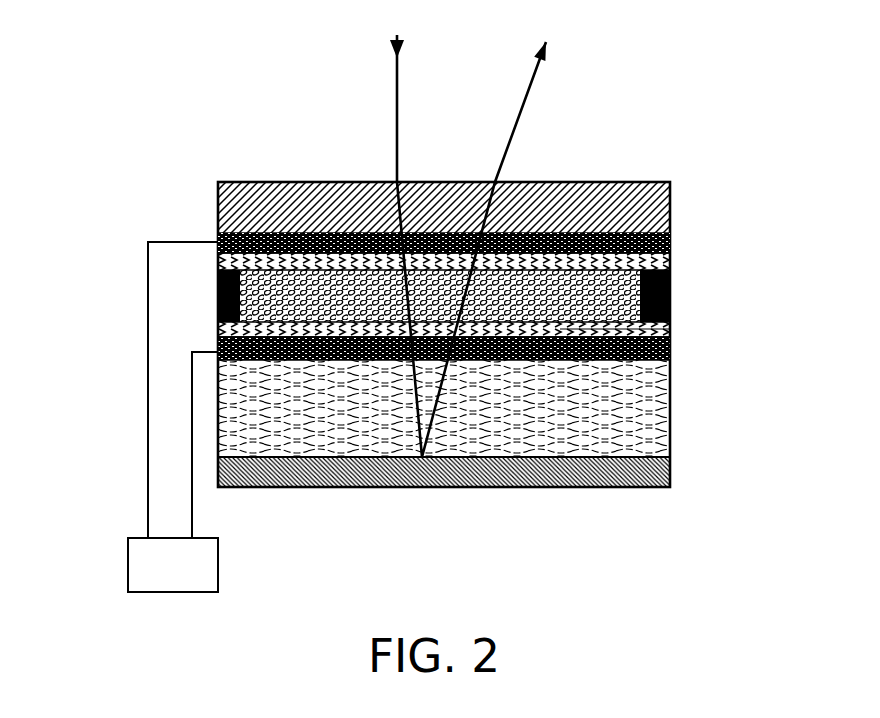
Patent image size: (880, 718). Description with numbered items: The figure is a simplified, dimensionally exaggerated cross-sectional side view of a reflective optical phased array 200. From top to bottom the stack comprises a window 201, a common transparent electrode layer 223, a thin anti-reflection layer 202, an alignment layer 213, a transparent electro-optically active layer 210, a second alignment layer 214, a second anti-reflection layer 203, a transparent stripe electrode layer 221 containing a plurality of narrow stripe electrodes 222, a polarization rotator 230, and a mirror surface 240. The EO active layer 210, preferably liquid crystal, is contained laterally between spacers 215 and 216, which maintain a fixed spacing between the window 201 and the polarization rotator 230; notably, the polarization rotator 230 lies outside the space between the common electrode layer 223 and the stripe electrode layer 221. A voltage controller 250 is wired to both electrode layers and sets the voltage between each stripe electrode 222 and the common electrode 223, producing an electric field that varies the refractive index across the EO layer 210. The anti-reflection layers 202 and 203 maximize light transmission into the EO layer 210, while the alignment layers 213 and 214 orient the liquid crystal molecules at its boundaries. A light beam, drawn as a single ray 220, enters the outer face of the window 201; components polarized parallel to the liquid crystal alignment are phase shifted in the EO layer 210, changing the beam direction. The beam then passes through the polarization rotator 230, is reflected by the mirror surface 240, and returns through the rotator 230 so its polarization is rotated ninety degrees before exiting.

The reflective optical phased array 200 is at (192, 148).
The window 201 is at (220, 200).
The common transparent electrode layer 223 is at (672, 245).
The anti-reflection layer 202 is at (670, 262).
The alignment layer 213 is at (220, 265).
The spacer 215 is at (218, 300).
The spacer 216 is at (670, 313).
The transparent electro-optically active layer 210 is at (670, 290).
The stripe electrode 222 is at (218, 338).
The alignment layer 214 is at (668, 330).
The transparent stripe electrode layer 221 is at (218, 353).
The anti-reflection layer 203 is at (668, 340).
The polarization rotator 230 is at (220, 420).
The mirror surface 240 is at (217, 477).
The light beam 220 is at (392, 140).
The voltage controller 250 is at (218, 568).